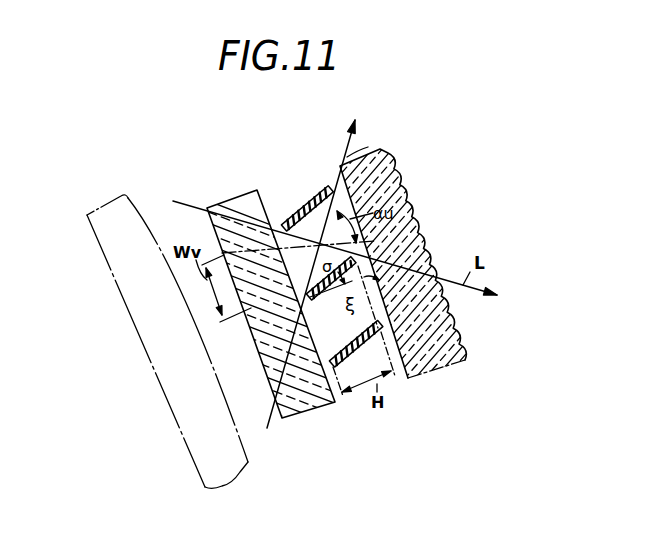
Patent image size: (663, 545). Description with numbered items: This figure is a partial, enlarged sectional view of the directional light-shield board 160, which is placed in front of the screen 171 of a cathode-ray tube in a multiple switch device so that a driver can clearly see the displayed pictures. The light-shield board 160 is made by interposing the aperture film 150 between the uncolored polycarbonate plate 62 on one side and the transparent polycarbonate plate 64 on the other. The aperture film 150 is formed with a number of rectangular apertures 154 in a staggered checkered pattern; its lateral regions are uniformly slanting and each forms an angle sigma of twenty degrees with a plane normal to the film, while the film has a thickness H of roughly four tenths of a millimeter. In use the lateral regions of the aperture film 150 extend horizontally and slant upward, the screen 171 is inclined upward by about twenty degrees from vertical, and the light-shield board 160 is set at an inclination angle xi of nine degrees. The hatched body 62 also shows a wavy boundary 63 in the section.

The screen 171 is at (148, 222).
The transparent polycarbonate plate 64 is at (250, 205).
The aperture film 150 is at (302, 206).
The directional light-shield board 160 is at (336, 165).
The rectangular apertures 154 is at (328, 334).
The undulating surface 63 is at (448, 321).
The uncolored polycarbonate plate 62 is at (443, 352).